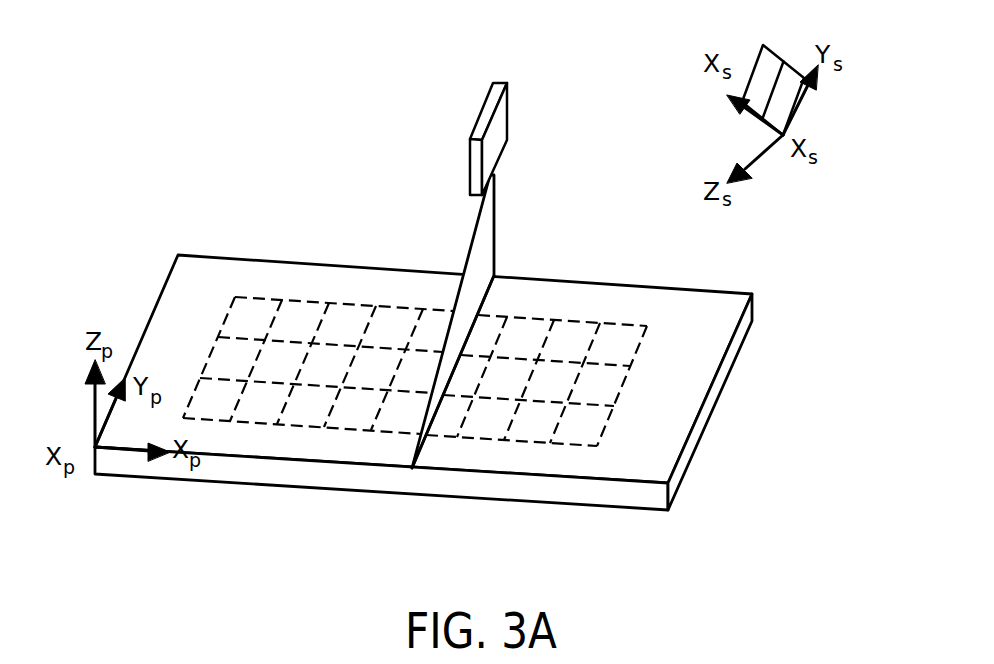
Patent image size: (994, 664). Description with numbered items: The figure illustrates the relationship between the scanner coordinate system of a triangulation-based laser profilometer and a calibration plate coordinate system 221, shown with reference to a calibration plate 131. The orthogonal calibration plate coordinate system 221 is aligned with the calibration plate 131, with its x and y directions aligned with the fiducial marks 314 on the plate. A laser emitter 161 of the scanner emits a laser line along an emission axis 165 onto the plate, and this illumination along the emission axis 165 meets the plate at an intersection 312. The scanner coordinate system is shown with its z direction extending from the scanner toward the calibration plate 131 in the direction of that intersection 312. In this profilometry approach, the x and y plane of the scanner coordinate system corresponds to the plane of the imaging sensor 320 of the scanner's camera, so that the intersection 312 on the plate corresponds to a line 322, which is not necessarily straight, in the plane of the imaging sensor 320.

The calibration plate 131 is at (550, 503).
The laser emitter 161 is at (508, 117).
The emission axis 165 is at (485, 233).
The intersection 312 is at (492, 290).
The fiducial marks 314 is at (622, 385).
The sensor 320 is at (787, 103).
The line 322 is at (778, 73).
The calibration plate coordinate system 221 is at (55, 627).